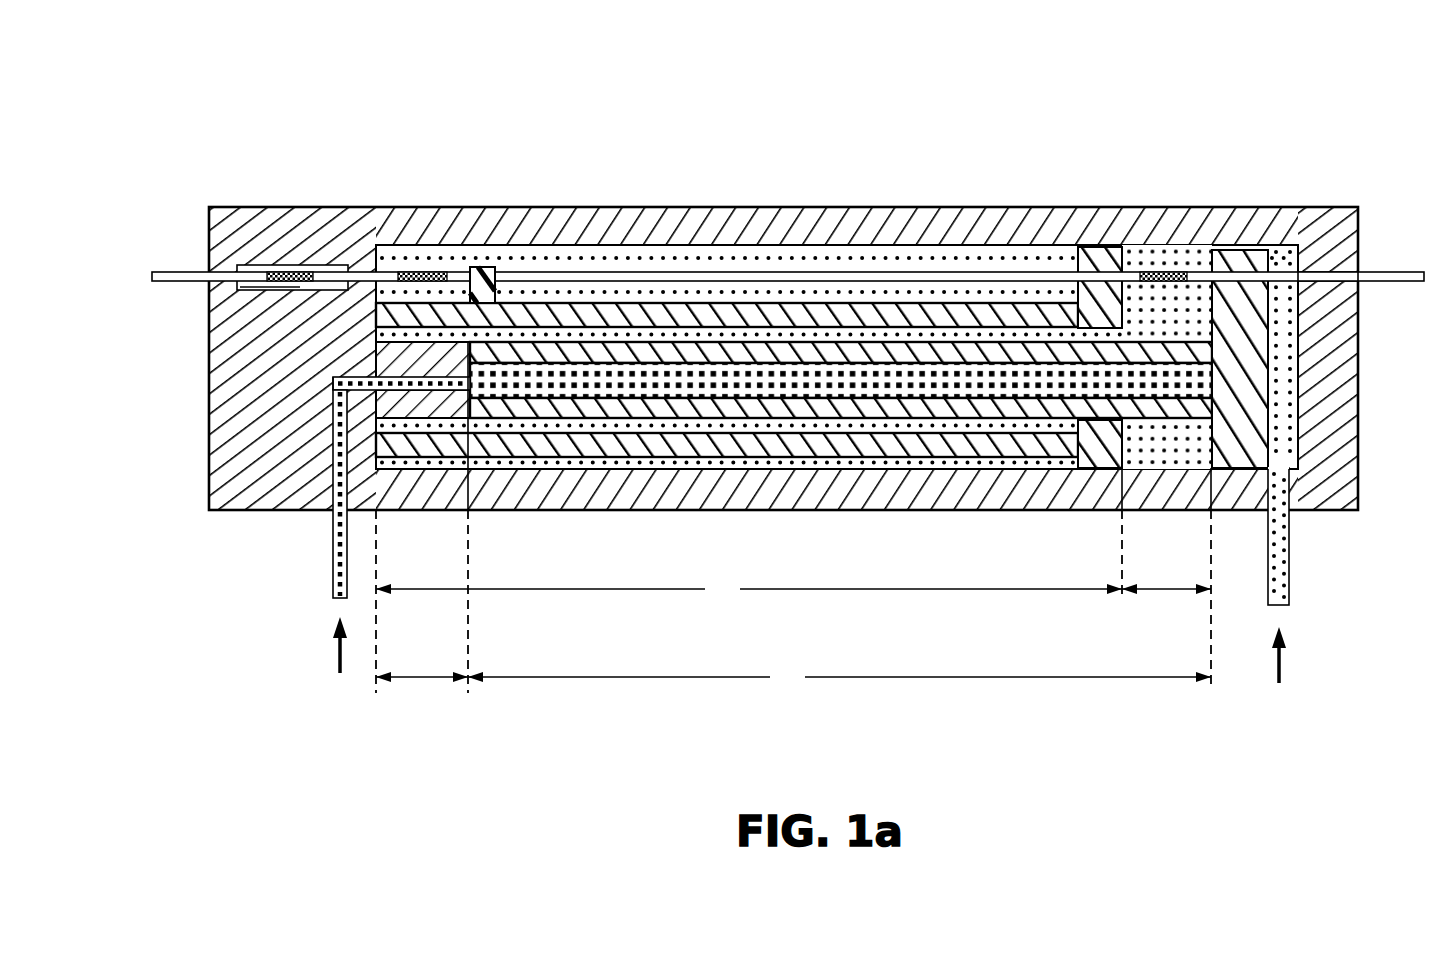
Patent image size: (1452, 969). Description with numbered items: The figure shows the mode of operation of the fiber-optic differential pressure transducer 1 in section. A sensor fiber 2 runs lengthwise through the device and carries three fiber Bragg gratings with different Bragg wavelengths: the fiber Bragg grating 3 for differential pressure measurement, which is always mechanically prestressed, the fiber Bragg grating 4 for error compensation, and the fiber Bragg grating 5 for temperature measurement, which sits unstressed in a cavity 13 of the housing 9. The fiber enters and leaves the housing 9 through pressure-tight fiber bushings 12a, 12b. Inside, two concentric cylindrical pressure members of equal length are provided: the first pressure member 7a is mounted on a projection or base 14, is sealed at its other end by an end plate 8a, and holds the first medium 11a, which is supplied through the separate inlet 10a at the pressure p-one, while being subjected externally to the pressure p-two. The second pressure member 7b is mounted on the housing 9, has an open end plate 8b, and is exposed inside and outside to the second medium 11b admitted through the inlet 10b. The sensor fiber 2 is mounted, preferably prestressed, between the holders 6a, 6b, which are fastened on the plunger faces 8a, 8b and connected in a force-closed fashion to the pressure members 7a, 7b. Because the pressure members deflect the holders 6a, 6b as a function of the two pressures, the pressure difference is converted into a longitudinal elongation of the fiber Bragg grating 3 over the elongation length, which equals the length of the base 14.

The transducer 1 is at (256, 71).
The sensor fiber 2 is at (178, 272).
The fiber Bragg grating 3 is at (1165, 275).
The fiber Bragg grating 4 is at (422, 274).
The fiber Bragg grating 5 is at (297, 276).
The holder 6a is at (1237, 275).
The holder 6b is at (1093, 277).
The first pressure member 7a is at (690, 350).
The second pressure member 7b is at (813, 312).
The end plate 8a is at (1237, 355).
The open end plate 8b is at (1225, 375).
The housing 9 is at (258, 510).
The inlet 10a is at (332, 542).
The inlet 10b is at (1285, 550).
The first medium 11a is at (705, 378).
The second medium 11b is at (1005, 290).
The pressure-tight fiber bushing 12a is at (1337, 270).
The pressure-tight fiber bushing 12b is at (223, 268).
The cavity 13 is at (250, 287).
The base 14 is at (425, 408).